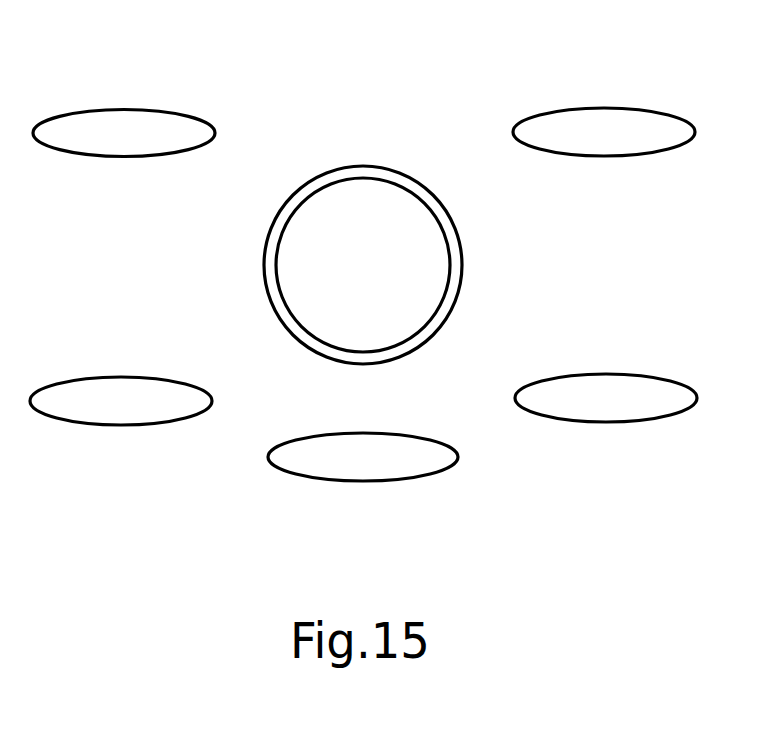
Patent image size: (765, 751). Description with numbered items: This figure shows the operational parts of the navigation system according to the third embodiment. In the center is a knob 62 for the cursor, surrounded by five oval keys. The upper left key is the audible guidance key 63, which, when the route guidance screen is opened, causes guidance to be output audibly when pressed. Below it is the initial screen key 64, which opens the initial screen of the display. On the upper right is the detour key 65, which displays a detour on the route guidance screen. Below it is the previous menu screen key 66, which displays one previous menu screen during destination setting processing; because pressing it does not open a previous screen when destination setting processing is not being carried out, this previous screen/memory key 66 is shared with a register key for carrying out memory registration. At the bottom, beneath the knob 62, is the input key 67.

The knob for cursor 62 is at (359, 167).
The audible guidance key 63 is at (152, 110).
The initial screen key 64 is at (150, 377).
The detour key 65 is at (632, 108).
The previous menu screen key 66 is at (635, 373).
The input key 67 is at (366, 482).